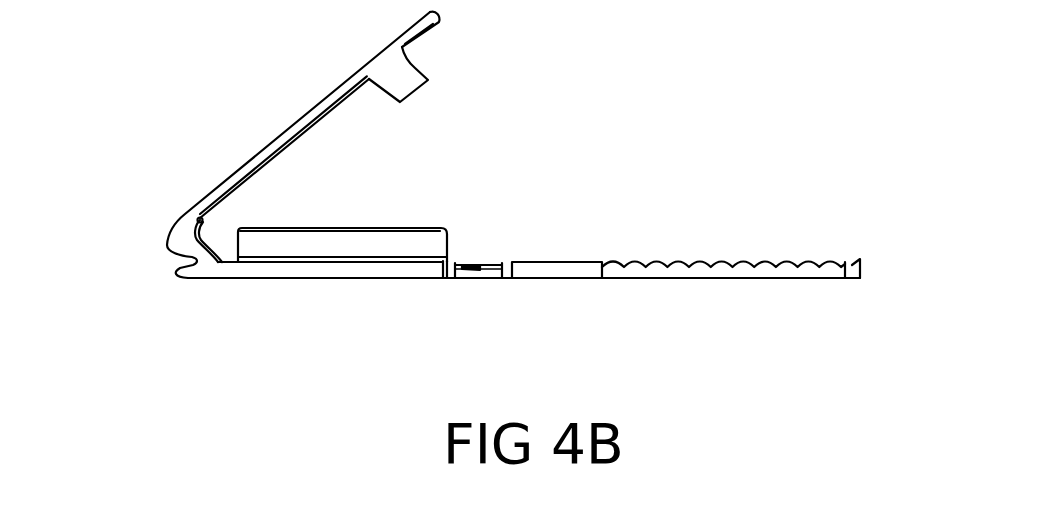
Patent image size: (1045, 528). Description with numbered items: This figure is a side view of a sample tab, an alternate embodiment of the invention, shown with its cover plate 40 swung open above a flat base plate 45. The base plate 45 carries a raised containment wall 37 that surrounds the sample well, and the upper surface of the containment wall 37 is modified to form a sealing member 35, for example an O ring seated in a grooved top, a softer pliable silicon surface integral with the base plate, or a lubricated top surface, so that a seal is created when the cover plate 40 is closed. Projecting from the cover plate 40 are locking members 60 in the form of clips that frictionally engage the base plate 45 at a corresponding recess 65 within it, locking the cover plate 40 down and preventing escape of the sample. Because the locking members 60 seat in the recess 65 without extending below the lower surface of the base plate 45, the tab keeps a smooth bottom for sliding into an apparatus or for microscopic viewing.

The cover plate 40 is at (293, 125).
The locking members 60 is at (404, 77).
The sealing member 35 is at (355, 228).
The containment wall 37 is at (425, 245).
The recess 65 is at (480, 277).
The base plate 45 is at (717, 279).